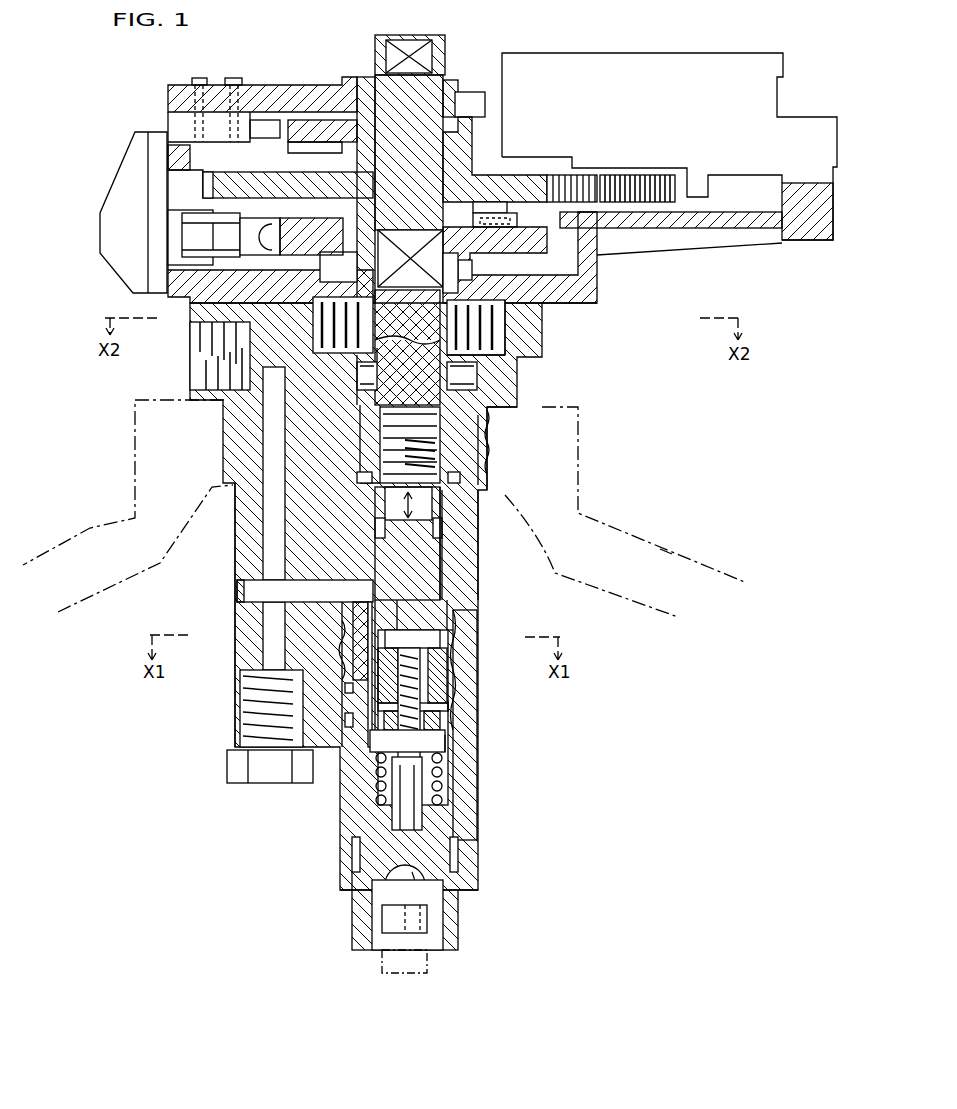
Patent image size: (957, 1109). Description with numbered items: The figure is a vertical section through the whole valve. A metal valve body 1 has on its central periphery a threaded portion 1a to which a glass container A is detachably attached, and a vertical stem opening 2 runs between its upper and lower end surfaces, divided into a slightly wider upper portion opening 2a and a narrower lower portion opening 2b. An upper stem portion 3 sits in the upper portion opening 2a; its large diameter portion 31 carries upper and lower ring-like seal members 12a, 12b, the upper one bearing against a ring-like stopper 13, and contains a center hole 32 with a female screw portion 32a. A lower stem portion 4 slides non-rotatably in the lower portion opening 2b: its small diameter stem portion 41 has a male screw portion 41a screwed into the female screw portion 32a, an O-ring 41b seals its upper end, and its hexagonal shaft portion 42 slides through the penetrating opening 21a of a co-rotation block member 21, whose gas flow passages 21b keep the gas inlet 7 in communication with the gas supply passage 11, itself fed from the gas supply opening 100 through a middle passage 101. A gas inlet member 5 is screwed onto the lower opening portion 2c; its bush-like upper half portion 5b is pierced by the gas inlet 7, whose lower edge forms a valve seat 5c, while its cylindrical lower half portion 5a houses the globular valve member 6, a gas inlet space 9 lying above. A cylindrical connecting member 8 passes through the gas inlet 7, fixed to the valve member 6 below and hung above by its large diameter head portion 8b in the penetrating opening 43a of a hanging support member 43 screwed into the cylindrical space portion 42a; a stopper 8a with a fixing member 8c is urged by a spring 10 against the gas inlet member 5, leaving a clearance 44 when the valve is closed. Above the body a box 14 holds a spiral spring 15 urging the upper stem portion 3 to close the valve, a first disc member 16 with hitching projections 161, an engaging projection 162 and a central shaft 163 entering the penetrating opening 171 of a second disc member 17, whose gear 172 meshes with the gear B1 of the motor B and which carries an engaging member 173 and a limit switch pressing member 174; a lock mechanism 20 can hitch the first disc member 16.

The valve body 1 is at (585, 358).
The threaded portion 1a is at (481, 453).
The vertical stem opening 2 is at (470, 507).
The upper portion opening 2a is at (476, 470).
The lower portion opening 2b is at (460, 545).
The lower opening portion 2c is at (463, 878).
The upper stem portion 3 is at (508, 400).
The lower stem portion 4 is at (462, 563).
The gas inlet member 5 is at (470, 928).
The cylindrical lower half portion 5a is at (357, 930).
The bush-like upper half portion 5b is at (459, 850).
The valve seat 5c is at (355, 880).
The valve member 6 is at (428, 899).
The gas inlet 7 is at (440, 815).
The cylindrical connecting member 8 is at (440, 785).
The stopper 8a is at (465, 745).
The large diameter head portion 8b is at (410, 655).
The fixing member 8c is at (455, 733).
The gas inlet space 9 is at (443, 765).
The spring 10 is at (350, 786).
The gas supply passage 11 is at (303, 592).
The upper ring-like seal member 12a is at (510, 382).
The lower ring-like seal member 12b is at (466, 483).
The ring-like stopper 13 is at (533, 345).
The box 14 is at (262, 86).
The spiral spring 15 is at (522, 319).
The first disc member 16 is at (541, 236).
The second disc member 17 is at (508, 175).
The lock mechanism 20 is at (162, 236).
The co-rotation block member 21 is at (477, 627).
The penetrating opening 21a is at (478, 645).
The gas flow passages 21b is at (352, 626).
The large diameter portion 31 is at (367, 407).
The center hole 32 is at (378, 418).
The female screw portion 32a is at (372, 460).
The small diameter stem portion 41 is at (454, 580).
The male screw portion 41a is at (488, 404).
The O-ring 41b is at (452, 530).
The hexagonal shaft portion 42 is at (448, 677).
The cylindrical space portion 42a is at (472, 605).
The hanging support member 43 is at (448, 698).
The penetrating opening 43a is at (448, 692).
The clearance 44 is at (440, 715).
The gas supply opening 100 is at (190, 358).
The middle passage 101 is at (268, 534).
The hitching projections 161 is at (275, 224).
The engaging projection 162 is at (511, 224).
The central shaft 163 is at (440, 170).
The penetrating opening 171 is at (345, 172).
The gear 172 is at (593, 175).
The engaging member 173 is at (498, 207).
The limit switch pressing member 174 is at (293, 146).
The glass container A is at (688, 550).
The motor B is at (665, 70).
The gear of the motor B1 is at (662, 180).